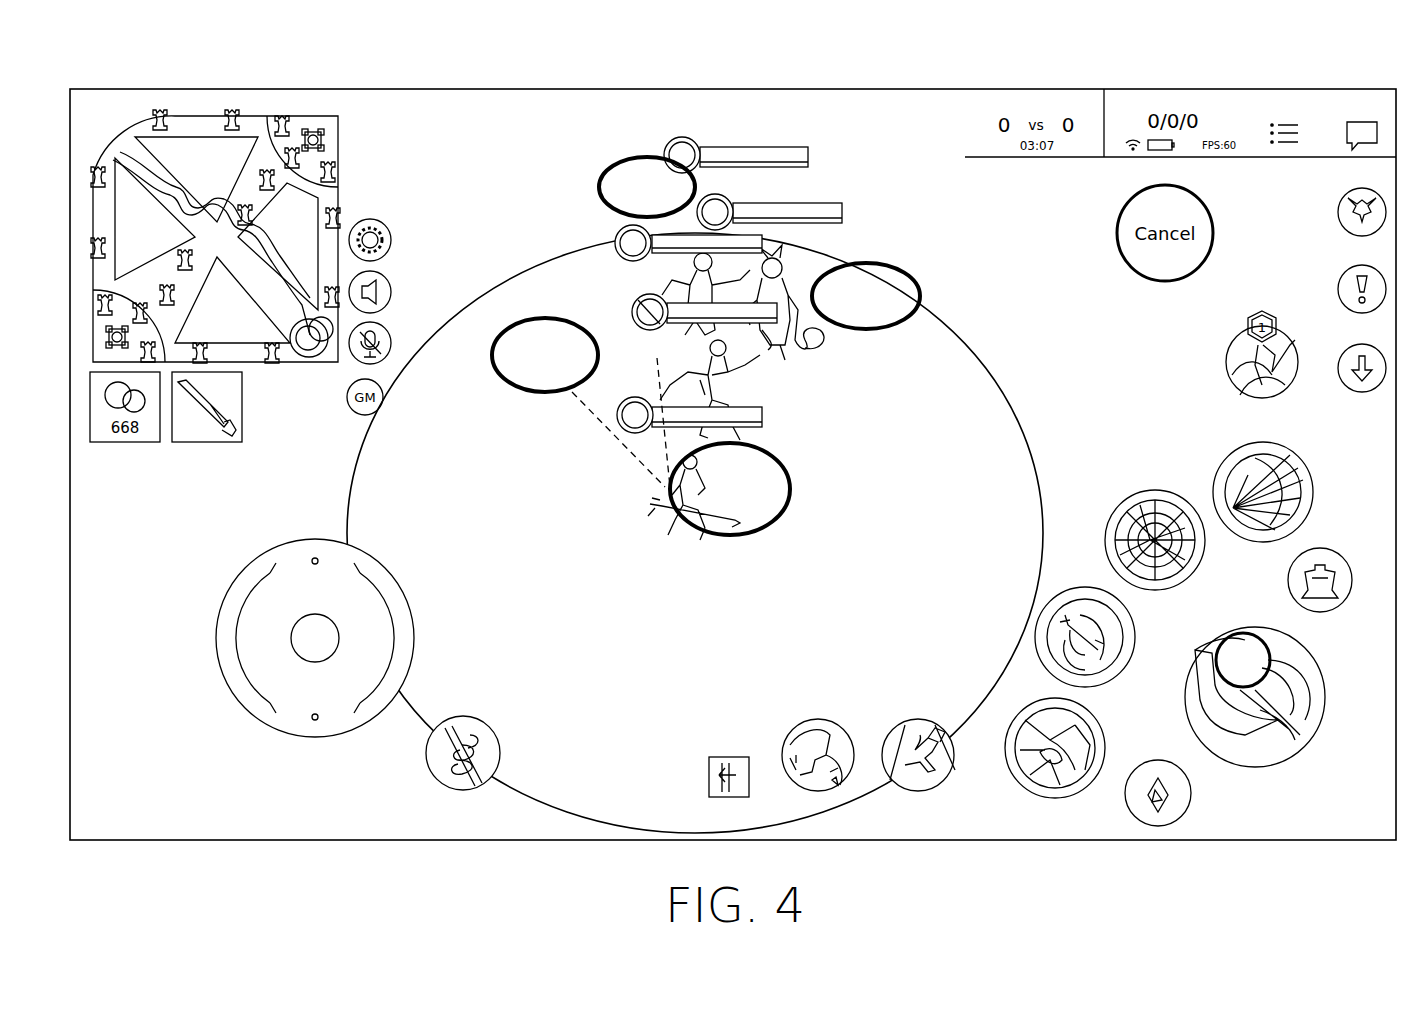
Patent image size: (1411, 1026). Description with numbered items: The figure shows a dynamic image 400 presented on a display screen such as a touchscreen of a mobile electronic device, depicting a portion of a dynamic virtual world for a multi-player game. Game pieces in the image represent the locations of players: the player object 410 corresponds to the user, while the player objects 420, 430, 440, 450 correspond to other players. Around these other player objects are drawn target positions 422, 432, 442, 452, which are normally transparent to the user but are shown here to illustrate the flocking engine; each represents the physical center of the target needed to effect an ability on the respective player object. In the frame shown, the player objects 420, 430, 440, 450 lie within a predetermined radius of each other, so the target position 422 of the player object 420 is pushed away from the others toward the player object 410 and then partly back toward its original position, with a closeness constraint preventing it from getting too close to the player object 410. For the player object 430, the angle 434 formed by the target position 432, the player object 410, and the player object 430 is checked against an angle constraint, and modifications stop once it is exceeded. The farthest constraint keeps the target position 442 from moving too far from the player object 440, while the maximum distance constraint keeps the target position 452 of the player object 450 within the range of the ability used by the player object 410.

The dynamic image 400 is at (1292, 50).
The player object corresponding to the user 410 is at (694, 538).
The player object 420 is at (738, 392).
The target position of player object 420 422 is at (792, 486).
The player object 430 is at (636, 302).
The target position of player object 430 432 is at (493, 355).
The angle 434 is at (645, 453).
The player object 440 is at (800, 346).
The target position of player object 440 442 is at (922, 284).
The player object 450 is at (645, 258).
The target position of player object 450 452 is at (600, 184).